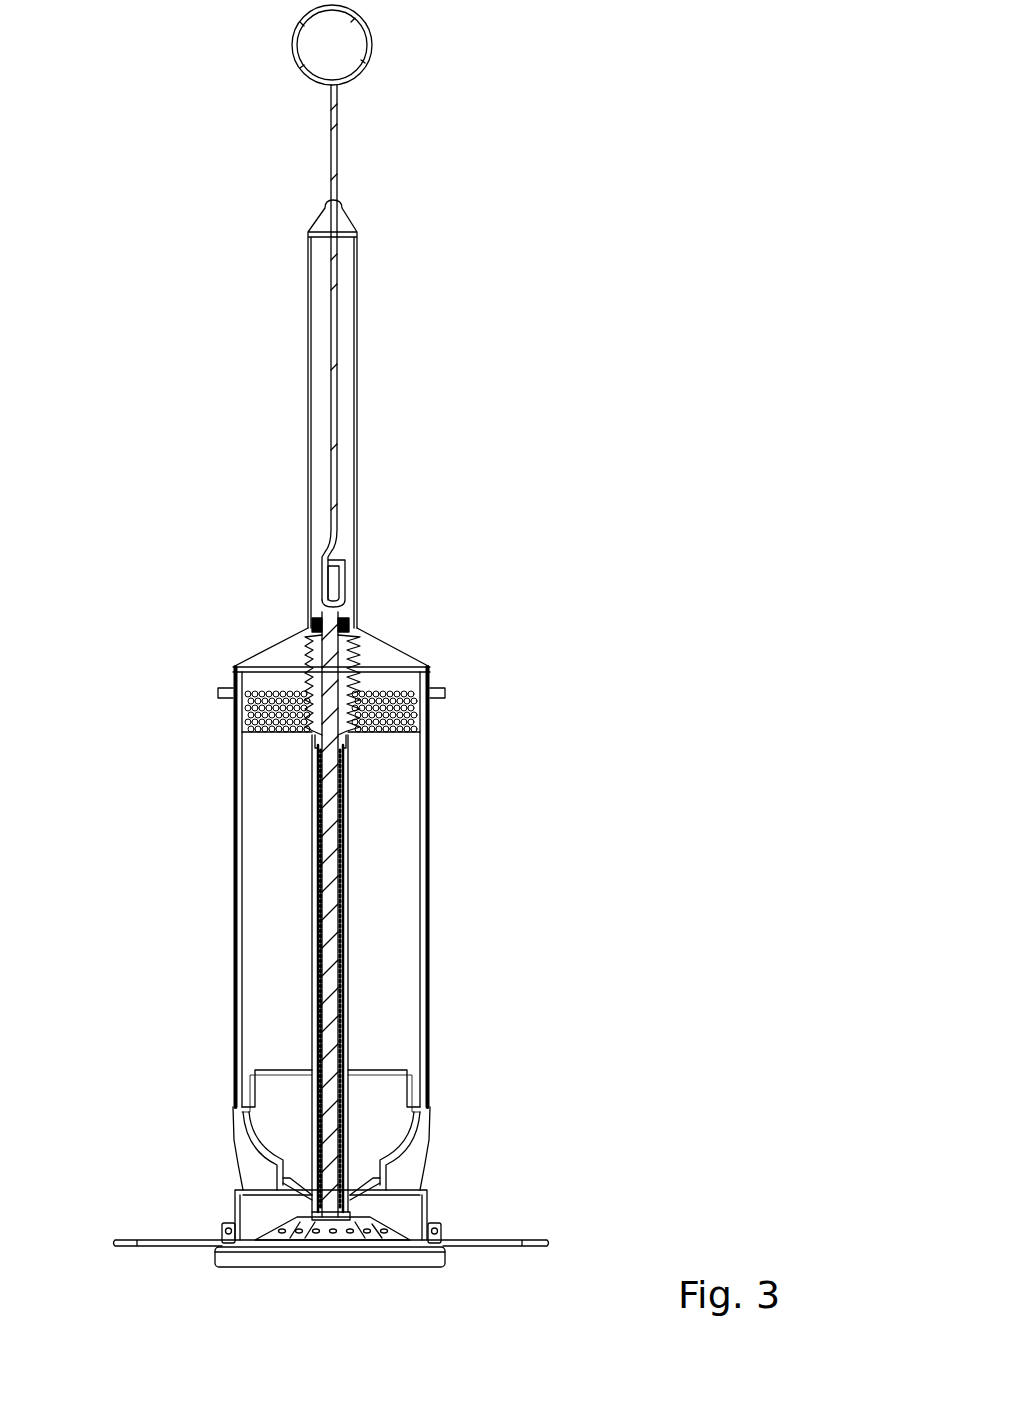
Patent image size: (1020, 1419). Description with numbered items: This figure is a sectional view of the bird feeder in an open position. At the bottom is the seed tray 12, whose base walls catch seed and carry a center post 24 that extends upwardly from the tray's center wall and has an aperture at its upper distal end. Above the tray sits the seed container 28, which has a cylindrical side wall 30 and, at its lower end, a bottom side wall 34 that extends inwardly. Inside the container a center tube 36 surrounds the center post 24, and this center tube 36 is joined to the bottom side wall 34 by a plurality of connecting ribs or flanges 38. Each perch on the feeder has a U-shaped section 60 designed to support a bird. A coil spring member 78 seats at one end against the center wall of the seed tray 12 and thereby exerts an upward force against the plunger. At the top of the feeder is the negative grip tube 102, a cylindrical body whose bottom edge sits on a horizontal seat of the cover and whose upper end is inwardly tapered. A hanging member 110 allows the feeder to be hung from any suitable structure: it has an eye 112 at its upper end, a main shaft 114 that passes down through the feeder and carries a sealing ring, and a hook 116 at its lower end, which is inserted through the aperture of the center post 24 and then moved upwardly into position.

The seed tray 12 is at (403, 1207).
The center post 24 is at (345, 932).
The seed container 28 is at (407, 1044).
The cylindrical side wall 30 is at (420, 785).
The bottom side wall 34 is at (265, 1140).
The center tube 36 is at (352, 978).
The connecting ribs or flanges 38 is at (427, 1113).
The U-shaped section 60 is at (547, 1242).
The coil spring member 78 is at (318, 855).
The negative grip tube 102 is at (408, 414).
The hanging member 110 is at (354, 300).
The eye 112 is at (372, 42).
The main shaft 114 is at (331, 144).
The hook 116 is at (345, 580).